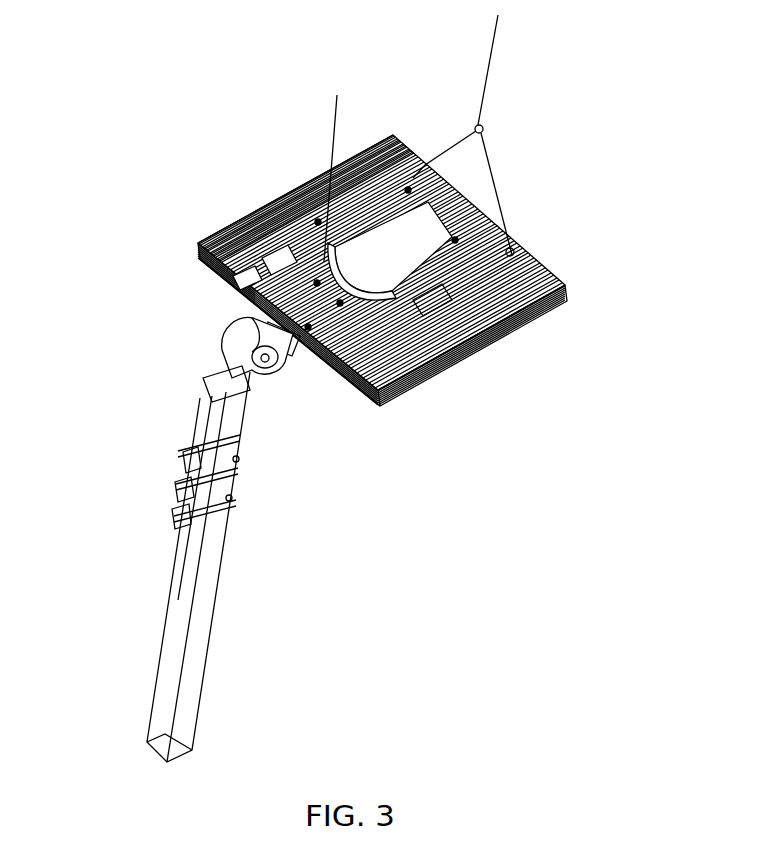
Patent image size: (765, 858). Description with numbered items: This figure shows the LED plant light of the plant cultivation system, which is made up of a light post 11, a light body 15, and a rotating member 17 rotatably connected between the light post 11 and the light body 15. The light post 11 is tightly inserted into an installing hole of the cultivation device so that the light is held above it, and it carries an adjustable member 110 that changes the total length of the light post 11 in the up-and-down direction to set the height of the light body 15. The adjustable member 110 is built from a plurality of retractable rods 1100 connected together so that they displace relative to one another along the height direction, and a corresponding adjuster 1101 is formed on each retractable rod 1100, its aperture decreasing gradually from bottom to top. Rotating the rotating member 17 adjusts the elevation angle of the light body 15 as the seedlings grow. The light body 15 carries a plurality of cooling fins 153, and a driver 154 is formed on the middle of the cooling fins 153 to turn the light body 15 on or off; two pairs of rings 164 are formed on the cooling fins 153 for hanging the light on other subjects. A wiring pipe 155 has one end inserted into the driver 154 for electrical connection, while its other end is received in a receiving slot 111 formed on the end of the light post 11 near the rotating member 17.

The light post 11 is at (192, 670).
The adjustable member 110 is at (203, 443).
The adjuster 1101 is at (187, 468).
The retractable rod 1100 is at (230, 500).
The receiving slot 111 is at (208, 393).
The rotating member 17 is at (222, 333).
The light body 15 is at (345, 271).
The cooling fins 153 is at (477, 353).
The driver 154 is at (270, 200).
The wiring pipe 155 is at (237, 280).
The rings 164 is at (512, 255).